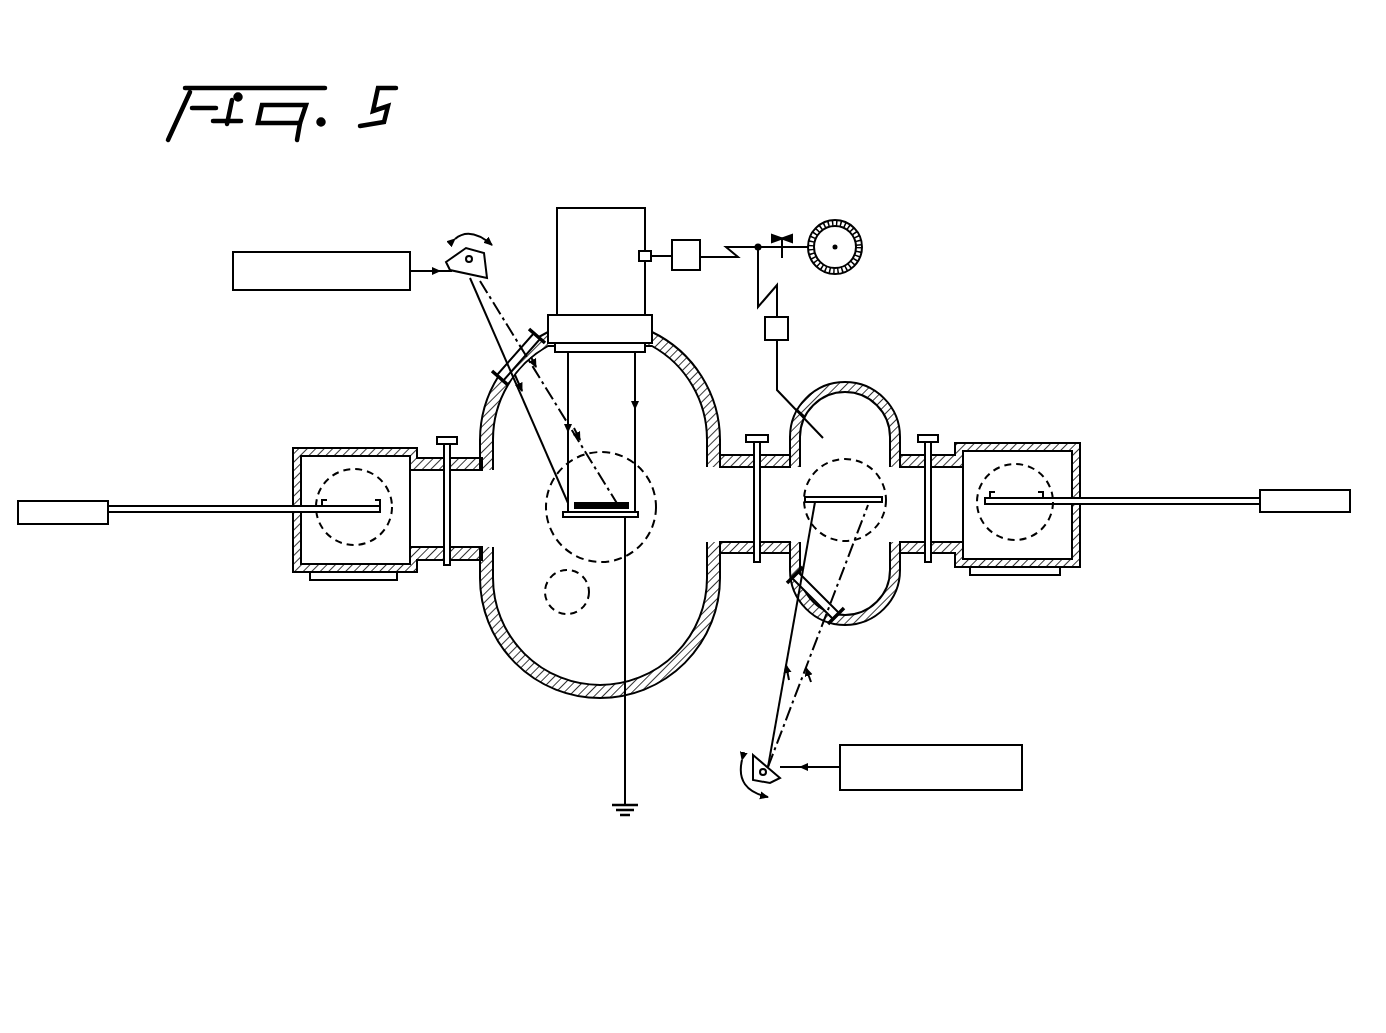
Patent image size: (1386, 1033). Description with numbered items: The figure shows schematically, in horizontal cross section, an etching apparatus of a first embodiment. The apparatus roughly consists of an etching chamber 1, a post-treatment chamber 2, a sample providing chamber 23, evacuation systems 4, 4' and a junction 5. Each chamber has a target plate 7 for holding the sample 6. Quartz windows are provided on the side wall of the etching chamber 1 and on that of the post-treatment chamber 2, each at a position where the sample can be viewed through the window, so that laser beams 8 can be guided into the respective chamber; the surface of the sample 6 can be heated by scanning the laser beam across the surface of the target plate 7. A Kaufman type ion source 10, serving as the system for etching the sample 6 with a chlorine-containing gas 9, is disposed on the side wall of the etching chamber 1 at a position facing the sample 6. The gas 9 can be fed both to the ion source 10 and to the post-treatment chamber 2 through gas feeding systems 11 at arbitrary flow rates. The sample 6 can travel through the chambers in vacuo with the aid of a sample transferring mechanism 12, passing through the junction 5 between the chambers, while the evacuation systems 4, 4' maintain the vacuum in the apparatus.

The etching chamber 1 is at (508, 652).
The post-treatment chamber 2 is at (893, 600).
The evacuation system 4 is at (645, 546).
The evacuation system 4' is at (644, 492).
The junction 5 is at (735, 560).
The sample 6 is at (617, 517).
The target plate 7 is at (562, 513).
The laser beam 8 is at (415, 270).
The chlorine-containing gas 9 is at (862, 230).
The Kaufman type ion source 10 is at (613, 213).
The gas feeding system 11 is at (692, 247).
The sample transferring mechanism 12 is at (200, 512).
The sample providing chamber 23 is at (310, 447).